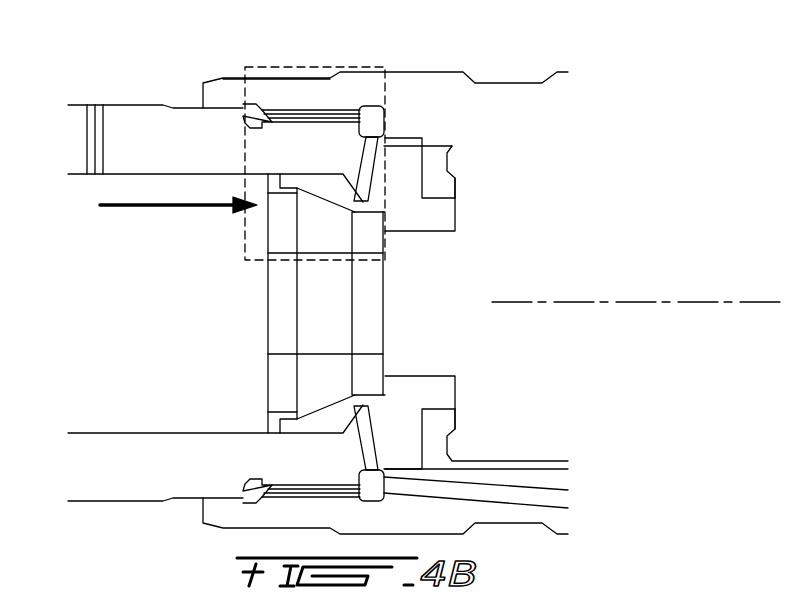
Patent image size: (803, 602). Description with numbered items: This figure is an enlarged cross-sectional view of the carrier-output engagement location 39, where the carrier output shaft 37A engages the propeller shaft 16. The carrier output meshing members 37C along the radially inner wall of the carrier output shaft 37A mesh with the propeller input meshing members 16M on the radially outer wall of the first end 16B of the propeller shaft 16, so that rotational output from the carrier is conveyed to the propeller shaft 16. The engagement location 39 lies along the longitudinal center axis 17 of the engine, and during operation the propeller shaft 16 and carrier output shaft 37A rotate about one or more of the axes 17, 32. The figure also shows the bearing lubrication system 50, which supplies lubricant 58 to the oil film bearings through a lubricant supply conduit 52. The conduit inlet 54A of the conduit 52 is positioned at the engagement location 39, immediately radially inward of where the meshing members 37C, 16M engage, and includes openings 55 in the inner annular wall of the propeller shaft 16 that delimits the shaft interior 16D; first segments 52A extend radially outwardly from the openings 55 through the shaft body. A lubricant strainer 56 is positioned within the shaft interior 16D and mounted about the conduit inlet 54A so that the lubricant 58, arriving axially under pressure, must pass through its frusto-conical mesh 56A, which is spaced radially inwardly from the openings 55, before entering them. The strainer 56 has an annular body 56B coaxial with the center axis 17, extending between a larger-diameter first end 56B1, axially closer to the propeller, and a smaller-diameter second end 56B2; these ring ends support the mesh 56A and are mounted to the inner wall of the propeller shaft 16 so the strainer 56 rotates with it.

The propeller shaft 16 is at (110, 475).
The first end of the propeller shaft 16B is at (473, 204).
The shaft interior 16D is at (133, 340).
The propeller input meshing members 16M is at (278, 125).
The longitudinal center axis 17 is at (638, 301).
The axis 32 is at (717, 305).
The carrier output shaft 37A is at (330, 97).
The carrier output meshing members 37C is at (270, 110).
The carrier-output engagement location 39 is at (358, 65).
The bearing lubrication system 50 is at (397, 198).
The lubricant supply conduit 52 is at (455, 220).
The first segments 52A is at (383, 146).
The conduit inlet 54A is at (375, 207).
The openings 55 is at (368, 158).
The lubricant strainer 56 is at (240, 397).
The mesh 56A is at (325, 400).
The annular body 56B is at (272, 246).
The first end of the annular body 56B1 is at (258, 372).
The second end of the annular body 56B2 is at (386, 327).
The lubricant 58 is at (123, 207).